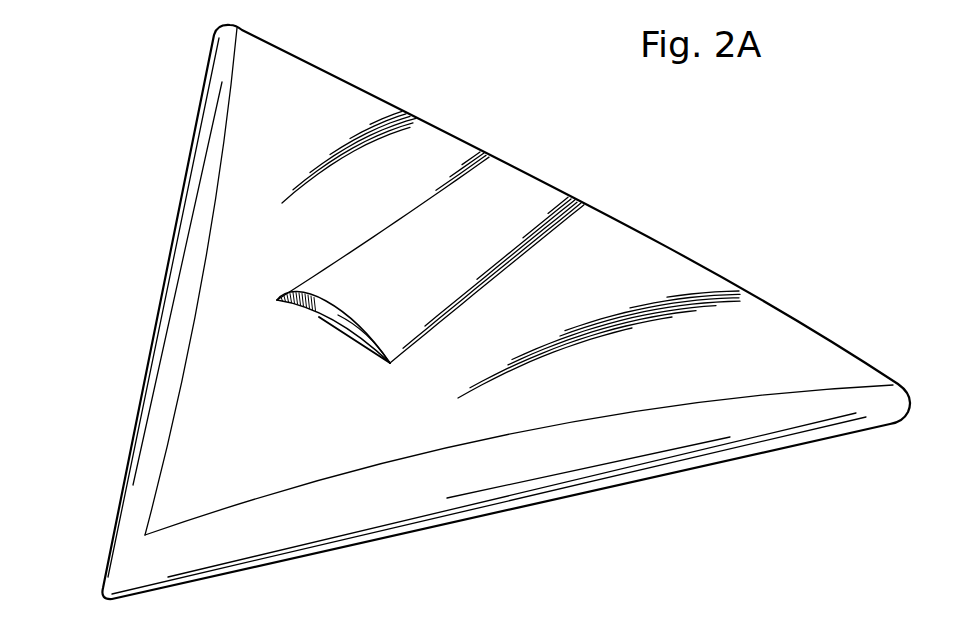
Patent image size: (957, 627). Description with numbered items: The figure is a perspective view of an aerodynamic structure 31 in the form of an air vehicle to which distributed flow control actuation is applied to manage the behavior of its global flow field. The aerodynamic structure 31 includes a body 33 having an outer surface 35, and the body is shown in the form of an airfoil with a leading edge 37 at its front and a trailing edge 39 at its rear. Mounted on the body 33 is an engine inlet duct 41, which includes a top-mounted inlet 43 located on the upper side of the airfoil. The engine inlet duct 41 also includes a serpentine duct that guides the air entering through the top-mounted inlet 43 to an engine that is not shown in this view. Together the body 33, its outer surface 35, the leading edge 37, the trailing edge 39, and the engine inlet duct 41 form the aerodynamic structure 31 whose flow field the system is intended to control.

The aerodynamic structure 31 is at (731, 163).
The body 33 is at (707, 463).
The outer surface 35 is at (242, 460).
The leading edge 37 is at (107, 535).
The trailing edge 39 is at (745, 292).
The engine inlet duct 41 is at (370, 267).
The top-mounted inlet 43 is at (311, 323).